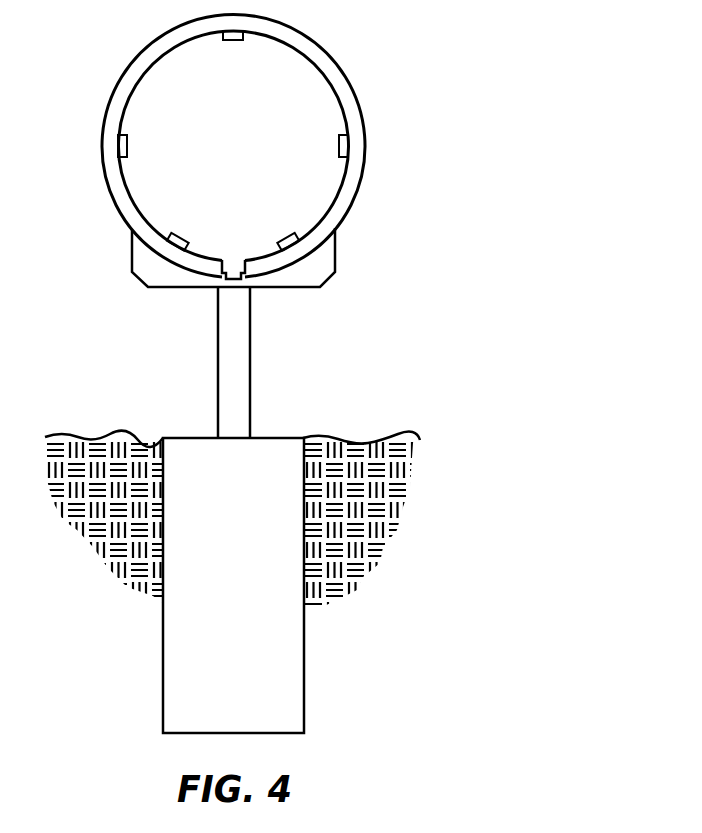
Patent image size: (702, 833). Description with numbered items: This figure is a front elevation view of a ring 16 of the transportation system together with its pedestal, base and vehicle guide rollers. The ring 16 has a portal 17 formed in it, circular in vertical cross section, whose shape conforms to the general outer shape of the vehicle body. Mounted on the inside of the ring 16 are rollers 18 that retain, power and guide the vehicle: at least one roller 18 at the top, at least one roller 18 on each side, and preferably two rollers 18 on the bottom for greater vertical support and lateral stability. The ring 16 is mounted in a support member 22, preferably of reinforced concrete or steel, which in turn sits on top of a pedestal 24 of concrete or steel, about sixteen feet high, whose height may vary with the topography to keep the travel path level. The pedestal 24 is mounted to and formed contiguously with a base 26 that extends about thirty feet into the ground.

The ring 16 is at (347, 95).
The portal 17 is at (138, 103).
The roller 18 is at (233, 43).
The support member 22 is at (147, 284).
The pedestal 24 is at (243, 357).
The base 26 is at (297, 680).